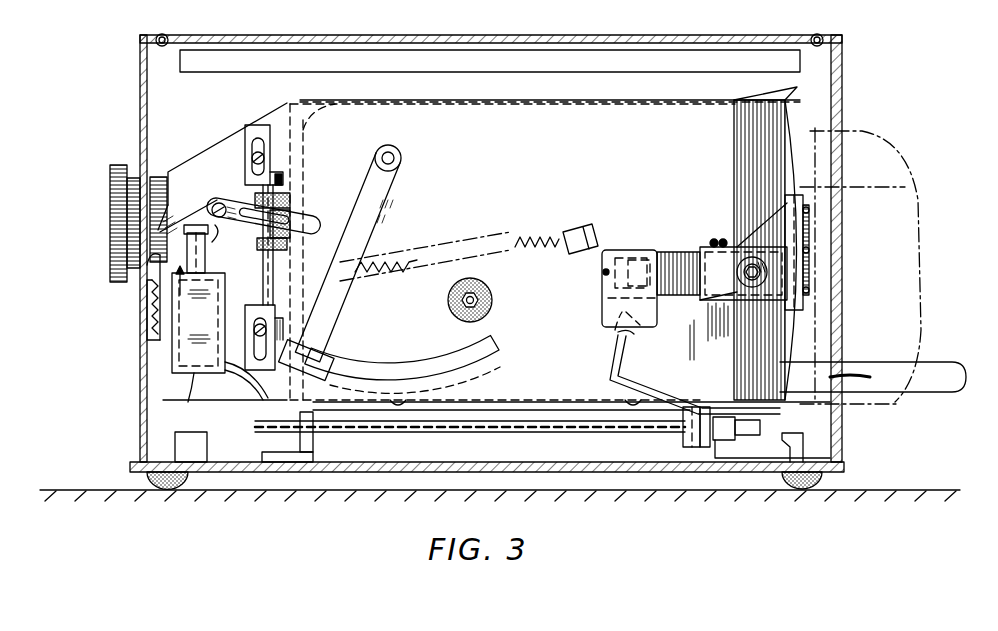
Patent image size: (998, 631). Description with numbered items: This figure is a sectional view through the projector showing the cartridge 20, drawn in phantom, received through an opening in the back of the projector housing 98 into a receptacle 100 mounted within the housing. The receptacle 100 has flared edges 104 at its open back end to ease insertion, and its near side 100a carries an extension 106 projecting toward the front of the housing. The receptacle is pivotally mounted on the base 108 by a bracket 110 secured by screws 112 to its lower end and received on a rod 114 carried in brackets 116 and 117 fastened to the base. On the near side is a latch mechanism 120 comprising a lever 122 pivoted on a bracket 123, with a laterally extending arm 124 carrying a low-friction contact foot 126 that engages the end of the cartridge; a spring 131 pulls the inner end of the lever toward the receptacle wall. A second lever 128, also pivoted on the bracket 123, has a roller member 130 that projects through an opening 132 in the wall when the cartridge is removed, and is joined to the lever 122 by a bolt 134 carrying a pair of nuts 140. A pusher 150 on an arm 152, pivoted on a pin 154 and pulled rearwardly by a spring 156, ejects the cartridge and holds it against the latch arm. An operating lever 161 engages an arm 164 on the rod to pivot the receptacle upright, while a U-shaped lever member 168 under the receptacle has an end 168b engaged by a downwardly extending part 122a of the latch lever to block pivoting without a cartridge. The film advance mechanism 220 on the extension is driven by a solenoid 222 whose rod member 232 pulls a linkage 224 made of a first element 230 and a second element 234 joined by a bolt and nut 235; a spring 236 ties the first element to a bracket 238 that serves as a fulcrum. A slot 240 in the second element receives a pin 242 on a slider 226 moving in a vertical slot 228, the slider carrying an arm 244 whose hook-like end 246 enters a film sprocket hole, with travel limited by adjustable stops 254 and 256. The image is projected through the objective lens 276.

The cartridge 20 is at (646, 106).
The projector housing 98 is at (140, 365).
The receptacle 100 is at (505, 103).
The near side of receptacle 100a is at (508, 219).
The flared edges 104 is at (760, 97).
The extension 106 is at (222, 142).
The base 108 is at (600, 473).
The bracket 110 is at (497, 405).
The screws 112 is at (408, 398).
The rod 114 is at (540, 418).
The bracket 116 is at (302, 458).
The bracket 117 is at (760, 445).
The latch mechanism 120 is at (706, 235).
The lever 122 is at (727, 285).
The downwardly extending part 122a is at (620, 312).
The bracket 123 is at (700, 245).
The laterally extending arm 124 is at (805, 229).
The contact foot 126 is at (810, 202).
The second lever 128 is at (627, 252).
The roller member 130 is at (656, 252).
The spring 131 is at (644, 336).
The opening 132 is at (604, 272).
The bolt 134 is at (748, 297).
The nuts 140 is at (758, 258).
The pusher 150 is at (326, 358).
The arm 152 is at (385, 220).
The pin 154 is at (402, 158).
The spring 156 is at (448, 296).
The operating lever 161 is at (937, 370).
The arm 164 is at (698, 404).
The U-shaped lever member 168 is at (612, 371).
The end of lever member 168b is at (616, 337).
The film advance mechanism 220 is at (189, 206).
The solenoid 222 is at (187, 400).
The linkage 224 is at (198, 299).
The slider 226 is at (296, 185).
The slot 228 is at (275, 292).
The first element 230 is at (228, 203).
The rod member 232 is at (251, 245).
The second element 234 is at (228, 232).
The bolt and nut 235 is at (240, 185).
The spring 236 is at (147, 323).
The bracket 238 is at (147, 300).
The slot 240 is at (300, 226).
The pin 242 is at (290, 212).
The arm 244 is at (296, 232).
The hook-like end 246 is at (385, 265).
The adjustable stop 254 is at (246, 135).
The adjustable stop 256 is at (266, 402).
The objective lens 276 is at (110, 237).